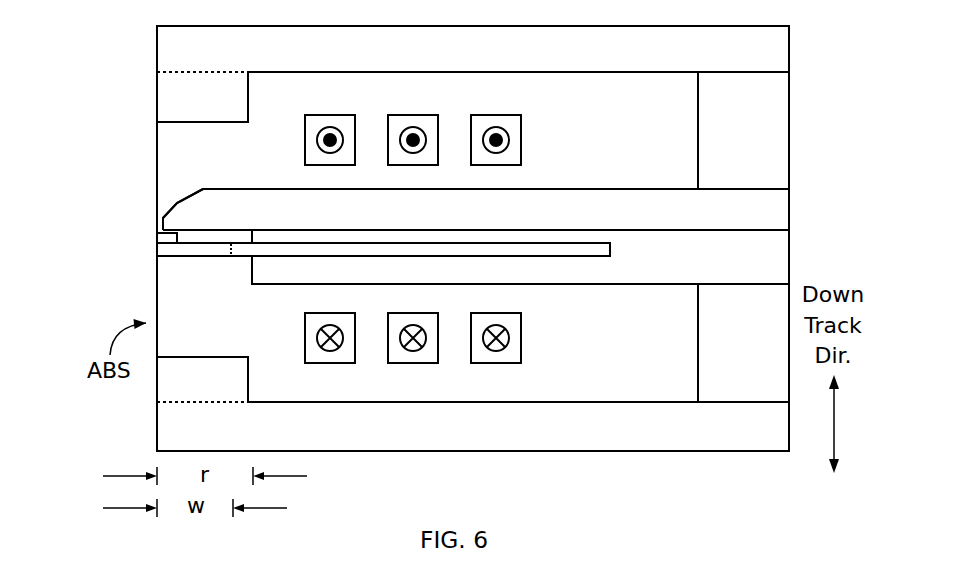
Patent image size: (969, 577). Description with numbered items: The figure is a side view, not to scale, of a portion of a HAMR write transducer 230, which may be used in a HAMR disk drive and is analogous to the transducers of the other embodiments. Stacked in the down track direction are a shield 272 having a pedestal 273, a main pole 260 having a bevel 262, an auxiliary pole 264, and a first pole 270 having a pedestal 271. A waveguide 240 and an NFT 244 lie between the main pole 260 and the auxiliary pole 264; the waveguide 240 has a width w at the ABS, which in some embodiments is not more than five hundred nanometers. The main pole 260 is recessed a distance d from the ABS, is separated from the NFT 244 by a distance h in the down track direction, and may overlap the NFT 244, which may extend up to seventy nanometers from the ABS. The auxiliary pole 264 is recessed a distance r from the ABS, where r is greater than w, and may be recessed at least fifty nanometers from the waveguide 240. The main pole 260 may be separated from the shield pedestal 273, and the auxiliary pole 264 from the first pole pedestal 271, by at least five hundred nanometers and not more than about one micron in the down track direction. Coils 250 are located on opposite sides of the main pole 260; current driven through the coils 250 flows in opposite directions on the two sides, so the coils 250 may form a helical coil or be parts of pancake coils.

The HAMR write transducer 230 is at (80, 21).
The waveguide 240 is at (190, 257).
The NFT 244 is at (158, 232).
The coils 250 is at (545, 138).
The main pole 260 is at (476, 216).
The bevel 262 is at (178, 201).
The auxiliary pole 264 is at (520, 270).
The first pole 270 is at (473, 420).
The pedestal 271 is at (152, 388).
The shield 272 is at (473, 55).
The pedestal 273 is at (155, 95).